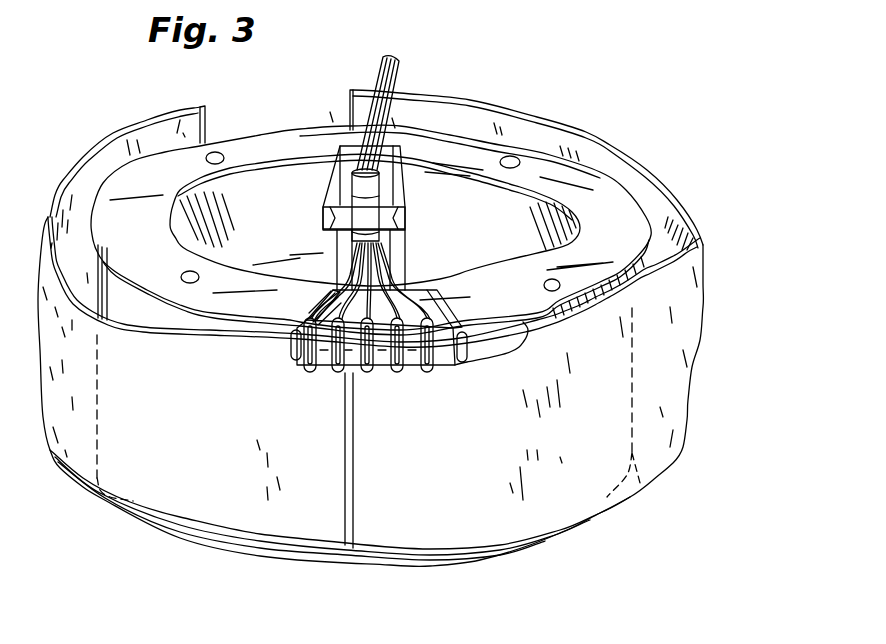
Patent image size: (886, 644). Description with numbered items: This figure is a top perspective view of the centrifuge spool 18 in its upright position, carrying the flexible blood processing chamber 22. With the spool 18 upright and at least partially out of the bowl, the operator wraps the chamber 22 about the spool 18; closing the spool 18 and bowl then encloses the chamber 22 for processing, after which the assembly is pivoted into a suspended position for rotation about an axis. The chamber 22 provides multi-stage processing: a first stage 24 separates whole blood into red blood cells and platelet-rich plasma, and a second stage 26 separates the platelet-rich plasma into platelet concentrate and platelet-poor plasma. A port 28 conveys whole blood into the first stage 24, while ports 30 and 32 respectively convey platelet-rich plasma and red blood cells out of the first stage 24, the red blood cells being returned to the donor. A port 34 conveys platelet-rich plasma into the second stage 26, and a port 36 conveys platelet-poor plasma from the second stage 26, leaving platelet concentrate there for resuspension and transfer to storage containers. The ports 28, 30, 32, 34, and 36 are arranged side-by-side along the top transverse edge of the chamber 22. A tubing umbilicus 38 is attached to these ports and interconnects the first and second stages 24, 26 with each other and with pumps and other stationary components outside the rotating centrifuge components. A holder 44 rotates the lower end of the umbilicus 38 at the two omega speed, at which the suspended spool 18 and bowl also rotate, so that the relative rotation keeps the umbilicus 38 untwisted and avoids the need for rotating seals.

The spool 18 is at (619, 207).
The blood processing chamber 22 is at (667, 407).
The first stage 24 is at (530, 483).
The second stage 26 is at (232, 478).
The port 28 is at (397, 378).
The port 30 is at (432, 318).
The port 32 is at (366, 378).
The port 34 is at (307, 367).
The port 36 is at (340, 375).
The tubing umbilicus 38 is at (400, 70).
The holder 44 is at (402, 196).